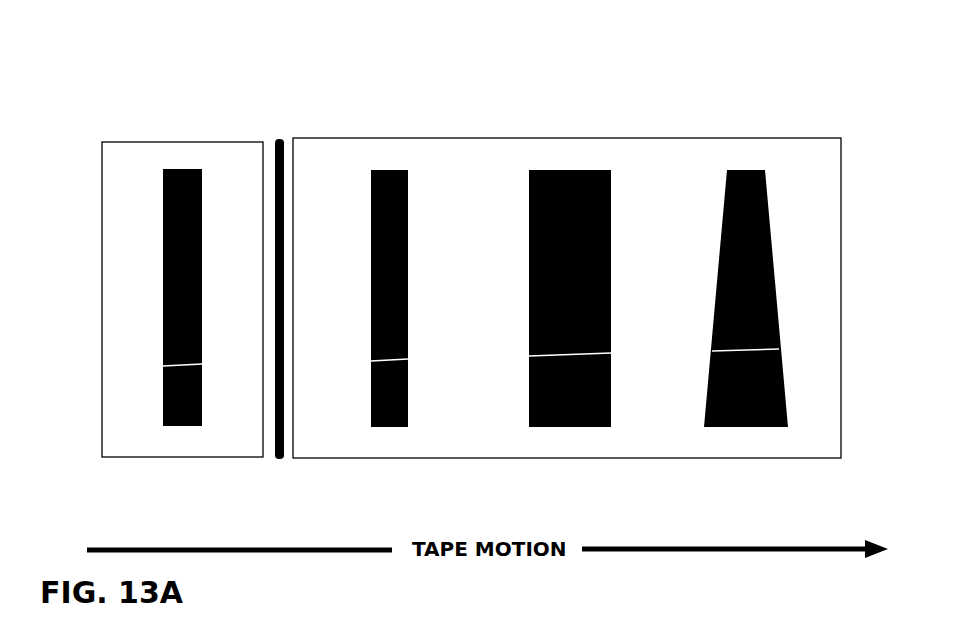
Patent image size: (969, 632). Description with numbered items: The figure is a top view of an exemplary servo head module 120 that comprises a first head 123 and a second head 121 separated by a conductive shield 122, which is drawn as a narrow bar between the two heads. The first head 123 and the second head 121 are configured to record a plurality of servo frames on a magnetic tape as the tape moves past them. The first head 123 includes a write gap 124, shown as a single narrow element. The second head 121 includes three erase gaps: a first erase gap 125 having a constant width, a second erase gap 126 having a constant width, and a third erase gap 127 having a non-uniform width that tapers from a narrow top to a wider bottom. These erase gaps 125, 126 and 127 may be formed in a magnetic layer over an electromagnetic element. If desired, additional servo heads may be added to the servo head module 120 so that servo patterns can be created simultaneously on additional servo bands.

The servo head module 120 is at (229, 51).
The second head 121 is at (552, 138).
The conductive shield 122 is at (279, 121).
The first head 123 is at (215, 142).
The write gap 124 is at (217, 389).
The first erase gap 125 is at (358, 389).
The second erase gap 126 is at (520, 395).
The third erase gap 127 is at (779, 219).